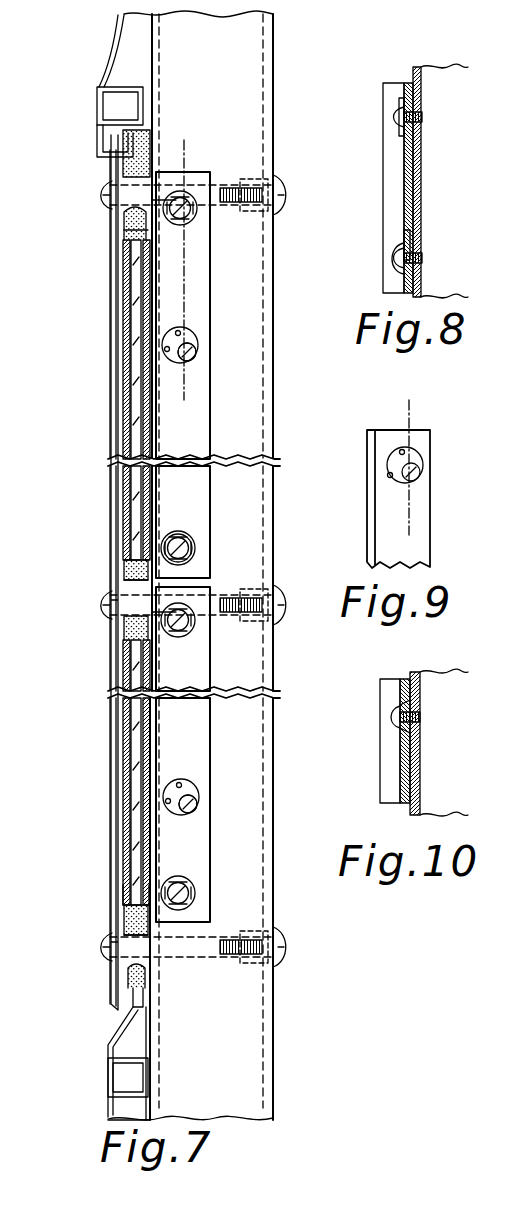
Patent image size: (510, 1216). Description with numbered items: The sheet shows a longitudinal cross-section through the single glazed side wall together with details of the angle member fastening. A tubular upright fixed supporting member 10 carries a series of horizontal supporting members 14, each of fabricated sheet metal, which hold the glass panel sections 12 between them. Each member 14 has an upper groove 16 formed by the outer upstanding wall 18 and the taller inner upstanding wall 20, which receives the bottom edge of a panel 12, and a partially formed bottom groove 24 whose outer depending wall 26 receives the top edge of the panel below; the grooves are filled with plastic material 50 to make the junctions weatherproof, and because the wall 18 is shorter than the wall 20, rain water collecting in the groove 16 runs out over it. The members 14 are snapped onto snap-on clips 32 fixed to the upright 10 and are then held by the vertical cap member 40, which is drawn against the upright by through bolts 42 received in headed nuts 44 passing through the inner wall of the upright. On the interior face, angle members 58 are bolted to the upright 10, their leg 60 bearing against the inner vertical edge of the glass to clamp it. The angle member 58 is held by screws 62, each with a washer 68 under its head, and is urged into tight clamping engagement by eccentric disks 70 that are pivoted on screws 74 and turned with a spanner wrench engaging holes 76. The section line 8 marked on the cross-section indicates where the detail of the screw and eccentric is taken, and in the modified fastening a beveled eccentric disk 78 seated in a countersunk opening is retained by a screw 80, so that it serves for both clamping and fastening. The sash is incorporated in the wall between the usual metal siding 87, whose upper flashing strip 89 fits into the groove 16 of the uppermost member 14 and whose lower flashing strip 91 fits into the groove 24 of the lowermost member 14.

In FIG. 7, the upright fixed supporting member 10 is at (278, 90).
In FIG. 8, the upright fixed supporting member 10 is at (422, 66).
In FIG. 9, the upright fixed supporting member 10 is at (392, 515).
In FIG. 10, the upright fixed supporting member 10 is at (448, 678).
In FIG. 7, the panel section 12 is at (135, 412).
In FIG. 7, the horizontal supporting member 14 is at (111, 212).
In FIG. 7, the upper groove 16 is at (158, 148).
In FIG. 7, the outer upstanding wall 18 is at (128, 900).
In FIG. 7, the inner upstanding wall 20 is at (152, 900).
In FIG. 7, the bottom groove 24 is at (126, 228).
In FIG. 7, the outer depending wall 26 is at (128, 245).
In FIG. 7, the snap-on clip 32 is at (170, 190).
In FIG. 7, the cap member 40 is at (112, 350).
In FIG. 7, the through bolt 42 is at (100, 195).
In FIG. 7, the headed nut 44 is at (284, 203).
In FIG. 7, the plastic material 50 is at (128, 578).
In FIG. 7, the angle member 58 is at (204, 436).
In FIG. 8, the angle member 58 is at (408, 82).
In FIG. 9, the angle member 58 is at (422, 548).
In FIG. 10, the angle member 58 is at (404, 678).
In FIG. 8, the leg of angle member 60 is at (384, 183).
In FIG. 10, the leg of angle member 60 is at (386, 696).
In FIG. 7, the screw 62 is at (194, 216).
In FIG. 8, the screw 62 is at (396, 118).
In FIG. 7, the washer 68 is at (190, 538).
In FIG. 8, the washer 68 is at (402, 134).
In FIG. 7, the eccentric disk 70 is at (188, 334).
In FIG. 8, the eccentric disk 70 is at (402, 272).
In FIG. 9, the eccentric disk 70 is at (416, 454).
In FIG. 7, the screw 74 is at (196, 354).
In FIG. 8, the screw 74 is at (398, 258).
In FIG. 9, the screw 74 is at (420, 476).
In FIG. 8, the hole 76 is at (406, 240).
In FIG. 9, the hole 76 is at (386, 474).
In FIG. 10, the beveled eccentric disk 78 is at (412, 710).
In FIG. 10, the screw 80 is at (396, 724).
In FIG. 7, the metal siding 87 is at (106, 66).
In FIG. 7, the upper flashing strip 89 is at (104, 148).
In FIG. 7, the lower flashing strip 91 is at (144, 1004).
In FIG. 7, the section line 8- 8 is at (165, 394).